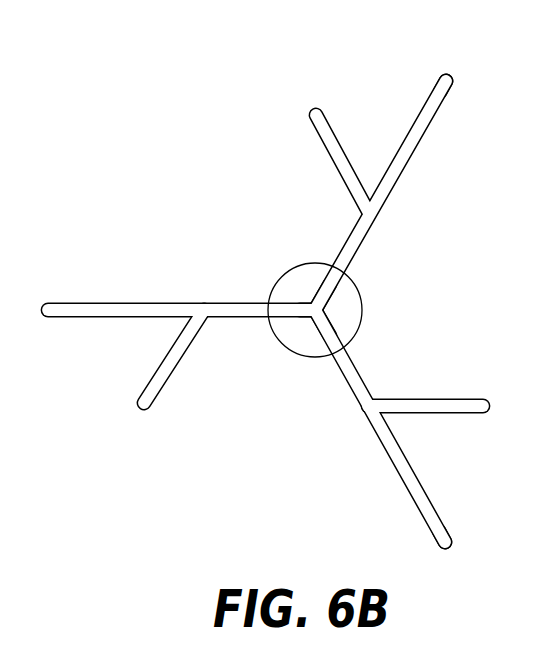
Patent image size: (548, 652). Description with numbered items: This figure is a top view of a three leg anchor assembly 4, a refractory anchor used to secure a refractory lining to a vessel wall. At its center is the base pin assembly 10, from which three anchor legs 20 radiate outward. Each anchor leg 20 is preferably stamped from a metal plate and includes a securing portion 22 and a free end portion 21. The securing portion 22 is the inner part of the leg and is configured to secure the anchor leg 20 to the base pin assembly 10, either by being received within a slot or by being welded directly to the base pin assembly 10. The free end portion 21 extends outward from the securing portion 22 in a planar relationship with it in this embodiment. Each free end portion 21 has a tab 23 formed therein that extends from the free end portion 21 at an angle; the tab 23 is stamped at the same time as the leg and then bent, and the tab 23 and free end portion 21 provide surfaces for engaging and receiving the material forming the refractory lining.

The three leg anchor assembly 4 is at (286, 286).
The base pin assembly 10 is at (360, 293).
The anchor leg 20 is at (434, 130).
The free end portion 21 is at (451, 82).
The securing portion 22 is at (326, 284).
The tab 23 is at (323, 127).